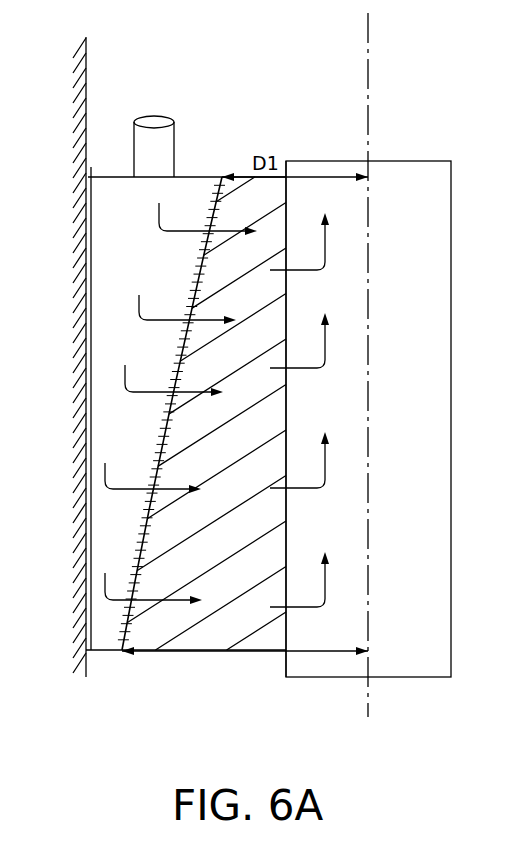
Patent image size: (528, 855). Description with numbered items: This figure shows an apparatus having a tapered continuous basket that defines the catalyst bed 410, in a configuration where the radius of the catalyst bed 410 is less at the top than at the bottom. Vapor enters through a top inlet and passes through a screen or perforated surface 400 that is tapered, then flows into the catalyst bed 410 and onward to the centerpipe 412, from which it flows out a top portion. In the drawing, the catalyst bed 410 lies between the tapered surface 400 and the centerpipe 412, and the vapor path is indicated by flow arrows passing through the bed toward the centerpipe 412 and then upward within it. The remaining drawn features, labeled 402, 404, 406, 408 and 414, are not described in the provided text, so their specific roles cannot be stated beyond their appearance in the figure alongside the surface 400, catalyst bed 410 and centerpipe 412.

The screen or perforated surface 400 is at (86, 297).
The tank / vessel 402 is at (174, 143).
The inlet / cylinder 404 is at (153, 112).
The boundary surface 406 is at (200, 268).
The flow channel 408 is at (287, 253).
The catalyst bed 410 is at (248, 500).
The centerpipe 412 is at (452, 418).
The upward flow arrows 414 is at (327, 357).